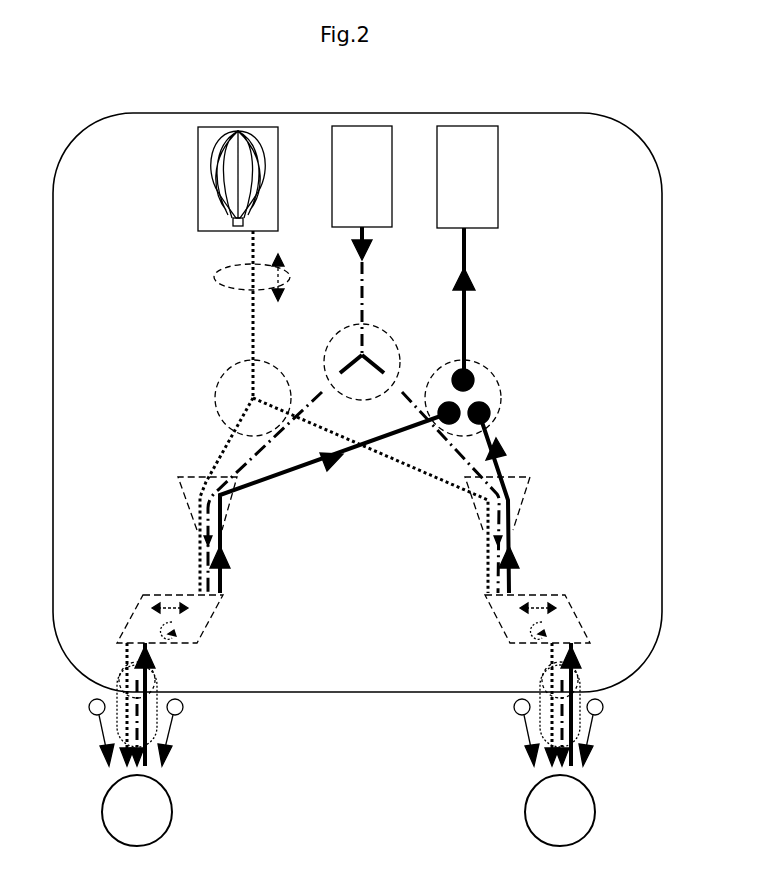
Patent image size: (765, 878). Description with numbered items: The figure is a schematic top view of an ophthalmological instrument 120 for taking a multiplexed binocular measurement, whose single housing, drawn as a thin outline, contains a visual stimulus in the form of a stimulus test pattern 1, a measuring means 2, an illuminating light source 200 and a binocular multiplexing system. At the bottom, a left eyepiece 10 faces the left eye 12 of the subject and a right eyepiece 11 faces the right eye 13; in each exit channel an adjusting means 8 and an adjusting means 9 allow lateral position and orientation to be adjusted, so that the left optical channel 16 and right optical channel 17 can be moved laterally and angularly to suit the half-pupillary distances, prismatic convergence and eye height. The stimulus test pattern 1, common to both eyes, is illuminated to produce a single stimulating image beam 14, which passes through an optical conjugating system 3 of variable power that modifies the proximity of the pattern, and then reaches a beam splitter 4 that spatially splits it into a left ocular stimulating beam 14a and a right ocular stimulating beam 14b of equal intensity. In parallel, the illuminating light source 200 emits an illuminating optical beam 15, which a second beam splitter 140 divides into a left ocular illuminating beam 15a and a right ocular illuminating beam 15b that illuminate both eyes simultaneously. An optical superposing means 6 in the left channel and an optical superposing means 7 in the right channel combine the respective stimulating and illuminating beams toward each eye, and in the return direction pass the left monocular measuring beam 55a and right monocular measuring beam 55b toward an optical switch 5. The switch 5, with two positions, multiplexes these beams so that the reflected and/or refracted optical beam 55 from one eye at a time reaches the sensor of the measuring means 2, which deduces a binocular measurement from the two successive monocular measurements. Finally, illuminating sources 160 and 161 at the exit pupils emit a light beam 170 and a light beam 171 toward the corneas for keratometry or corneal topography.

The ophthalmological instrument 120 is at (616, 119).
The stimulus test pattern 1 is at (198, 200).
The measuring means 2 is at (498, 165).
The illuminating light source 200 is at (392, 208).
The optical conjugating system 3 is at (215, 277).
The stimulating image beam 14 is at (250, 328).
The beam splitter 4 is at (215, 390).
The left ocular stimulating beam 14a is at (210, 463).
The right ocular stimulating beam 14b is at (402, 478).
The illuminating optical beam 15 is at (358, 290).
The beam splitter 140 is at (391, 340).
The left ocular illuminating beam 15a is at (305, 380).
The right ocular illuminating beam 15b is at (410, 386).
The reflected and/or refracted optical beam 55 is at (470, 300).
The optical switch 5 is at (486, 366).
The left monocular measuring beam 55a is at (278, 475).
The right monocular measuring beam 55b is at (490, 430).
The optical superposing means 6 is at (178, 490).
The optical superposing means 7 is at (530, 496).
The left optical channel 16 is at (200, 574).
The right optical channel 17 is at (514, 540).
The adjusting means 8 is at (143, 620).
The adjusting means 9 is at (572, 620).
The left eyepiece 10 is at (160, 678).
The right eyepiece 11 is at (540, 682).
The illuminating source 160 is at (86, 714).
The light beam 170 is at (174, 733).
The light beam 171 is at (592, 734).
The illuminating source 161 is at (604, 707).
The left eye 12 is at (172, 805).
The right eye 13 is at (596, 805).